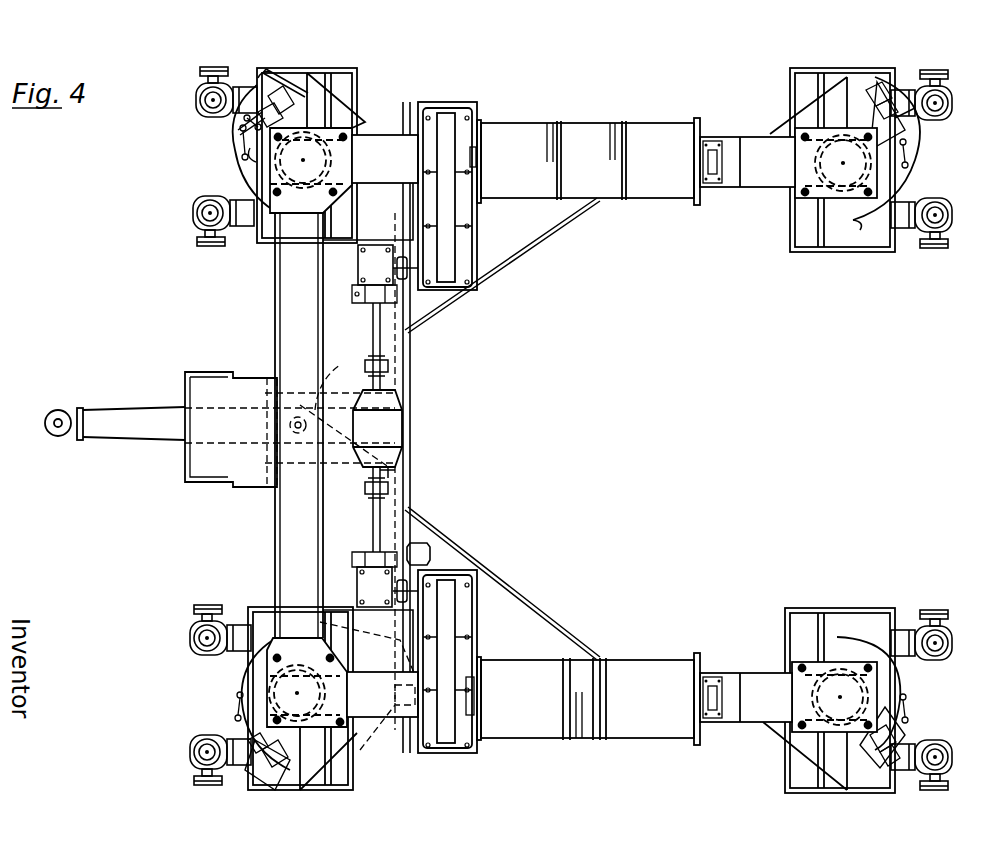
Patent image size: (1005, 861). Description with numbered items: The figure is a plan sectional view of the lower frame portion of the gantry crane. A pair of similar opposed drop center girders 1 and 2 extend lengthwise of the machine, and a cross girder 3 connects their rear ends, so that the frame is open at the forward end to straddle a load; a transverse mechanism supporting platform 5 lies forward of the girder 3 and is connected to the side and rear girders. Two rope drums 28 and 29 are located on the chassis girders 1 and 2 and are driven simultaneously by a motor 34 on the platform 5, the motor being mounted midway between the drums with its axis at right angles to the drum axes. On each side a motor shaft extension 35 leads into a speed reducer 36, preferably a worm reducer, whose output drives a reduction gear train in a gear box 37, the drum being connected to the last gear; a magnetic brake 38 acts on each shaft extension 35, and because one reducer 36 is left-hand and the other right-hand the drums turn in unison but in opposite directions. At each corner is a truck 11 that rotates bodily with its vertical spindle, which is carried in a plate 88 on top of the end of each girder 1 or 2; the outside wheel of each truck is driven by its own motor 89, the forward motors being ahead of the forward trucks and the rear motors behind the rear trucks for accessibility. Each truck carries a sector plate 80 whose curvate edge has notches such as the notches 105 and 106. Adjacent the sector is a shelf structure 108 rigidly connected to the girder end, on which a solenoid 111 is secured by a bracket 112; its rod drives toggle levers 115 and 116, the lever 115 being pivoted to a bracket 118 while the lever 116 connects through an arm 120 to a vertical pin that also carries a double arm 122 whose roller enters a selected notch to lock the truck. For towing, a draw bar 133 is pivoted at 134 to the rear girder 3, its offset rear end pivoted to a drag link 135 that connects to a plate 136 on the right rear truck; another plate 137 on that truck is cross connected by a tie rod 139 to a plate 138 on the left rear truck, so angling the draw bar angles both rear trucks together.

The drop center girder 1 is at (748, 673).
The drop center girder 2 is at (755, 187).
The cross girder 3 is at (292, 533).
The mechanism supporting platform 5 is at (330, 537).
The truck 11 is at (352, 776).
The drum 28 is at (540, 672).
The drum 29 is at (645, 190).
The motor 34 is at (383, 435).
The motor shaft extension 35 is at (380, 512).
The speed reducer 36 is at (360, 580).
The gear box 37 is at (445, 592).
The magnetic brake 38 is at (418, 550).
The sector plate 80 is at (887, 690).
The plate 88 is at (797, 690).
The motor 89 is at (925, 772).
The notch 105 is at (898, 190).
The notch 106 is at (848, 222).
The shelf structure 108 is at (820, 748).
The solenoid 111 is at (270, 74).
The bracket 112 is at (290, 80).
The toggle lever 115 is at (286, 116).
The toggle lever 116 is at (270, 104).
The bracket 118 is at (260, 164).
The arm 120 is at (240, 133).
The double arm 122 is at (243, 148).
The draw bar 133 is at (108, 430).
The pivot 134 is at (340, 412).
The drag link 135 is at (400, 487).
The plate 136 is at (403, 727).
The plate 137 is at (340, 625).
The plate 138 is at (361, 274).
The tie rod 139 is at (405, 362).